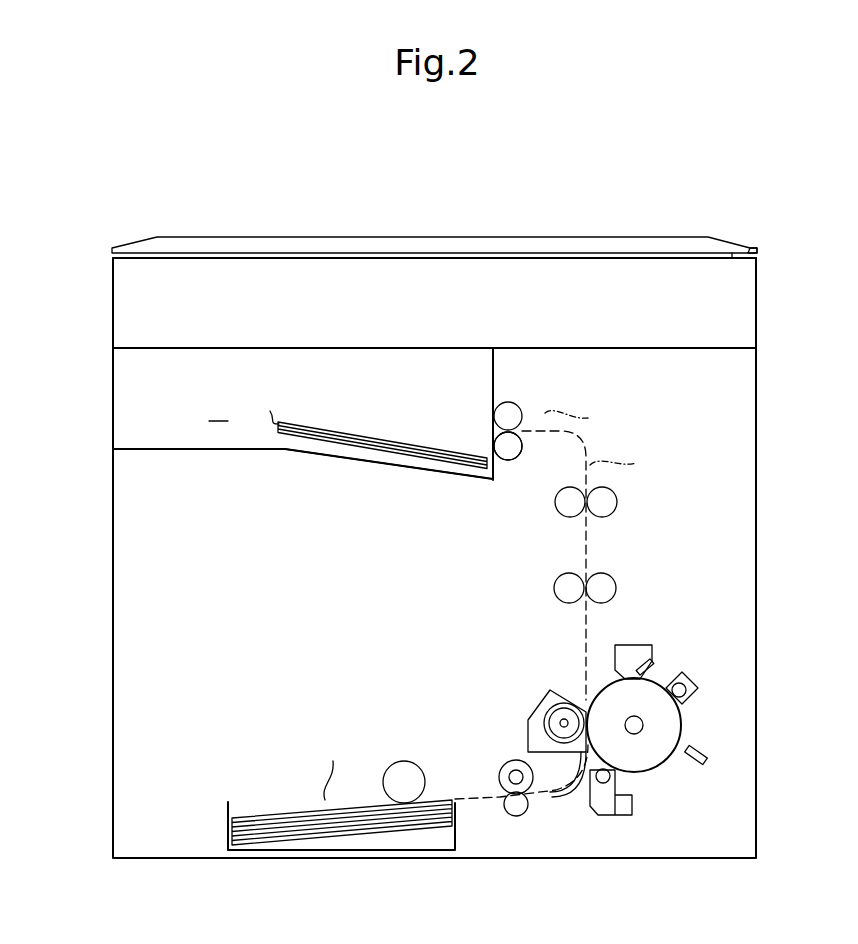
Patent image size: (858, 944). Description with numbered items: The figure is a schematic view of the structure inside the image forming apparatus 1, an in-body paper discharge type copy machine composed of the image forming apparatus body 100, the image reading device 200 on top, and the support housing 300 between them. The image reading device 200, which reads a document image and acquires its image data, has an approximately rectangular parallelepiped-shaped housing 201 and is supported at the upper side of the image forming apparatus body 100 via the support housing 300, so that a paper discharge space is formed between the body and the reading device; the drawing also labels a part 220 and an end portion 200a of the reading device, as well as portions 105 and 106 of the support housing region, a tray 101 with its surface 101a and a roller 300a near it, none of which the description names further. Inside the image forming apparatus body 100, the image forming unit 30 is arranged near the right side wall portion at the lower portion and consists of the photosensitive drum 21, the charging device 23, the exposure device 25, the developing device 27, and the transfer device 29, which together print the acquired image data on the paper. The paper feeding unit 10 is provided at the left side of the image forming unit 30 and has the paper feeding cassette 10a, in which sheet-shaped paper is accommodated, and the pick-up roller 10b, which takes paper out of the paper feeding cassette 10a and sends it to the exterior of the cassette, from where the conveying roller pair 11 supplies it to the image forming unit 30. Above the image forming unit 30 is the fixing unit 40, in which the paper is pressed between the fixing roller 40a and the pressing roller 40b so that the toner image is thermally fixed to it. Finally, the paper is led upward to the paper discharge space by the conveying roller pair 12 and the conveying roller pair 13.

The image forming apparatus 1 is at (436, 527).
The image forming apparatus body 100 is at (760, 603).
The image reading device 200 is at (482, 270).
The housing 201 is at (760, 333).
The document cover 220 is at (657, 247).
The cover end portion 200a is at (750, 250).
The support housing 300 is at (434, 524).
The upper housing portion 105 is at (137, 384).
The housing side wall 106 is at (115, 418).
The document tray 101 is at (370, 439).
The document tray surface 101a is at (355, 452).
The document feed roller 300a is at (496, 439).
The conveying roller pair 13 is at (523, 440).
The conveying roller pair 12 is at (598, 518).
The fixing unit 40 is at (575, 616).
The fixing roller 40a is at (598, 603).
The pressing roller 40b is at (556, 600).
The image forming unit 30 is at (619, 722).
The photosensitive drum 21 is at (655, 773).
The charging device 23 is at (690, 677).
The exposure device 25 is at (708, 760).
The developing device 27 is at (608, 816).
The transfer device 29 is at (528, 732).
The conveying roller pair 11 is at (500, 793).
The paper feeding unit 10 is at (297, 761).
The paper feeding cassette 10a is at (230, 820).
The pick-up roller 10b is at (400, 760).